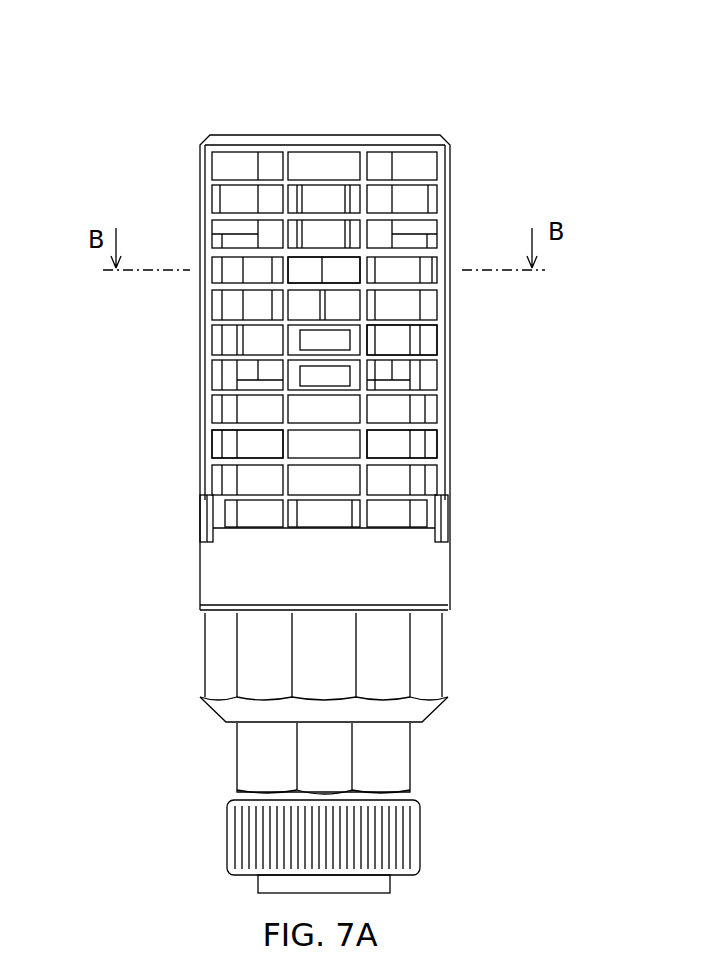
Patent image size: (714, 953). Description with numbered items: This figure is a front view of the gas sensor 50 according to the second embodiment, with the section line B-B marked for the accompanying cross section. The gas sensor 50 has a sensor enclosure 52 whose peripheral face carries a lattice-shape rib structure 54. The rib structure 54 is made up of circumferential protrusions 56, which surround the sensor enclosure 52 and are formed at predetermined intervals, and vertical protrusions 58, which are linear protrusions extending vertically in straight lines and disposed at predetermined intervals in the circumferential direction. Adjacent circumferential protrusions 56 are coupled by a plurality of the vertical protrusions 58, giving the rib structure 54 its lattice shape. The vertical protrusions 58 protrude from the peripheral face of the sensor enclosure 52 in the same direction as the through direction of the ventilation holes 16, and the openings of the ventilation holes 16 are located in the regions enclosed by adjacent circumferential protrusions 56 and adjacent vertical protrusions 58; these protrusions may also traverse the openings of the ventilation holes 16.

The gas sensor 50 is at (186, 94).
The ventilation holes 16 is at (320, 268).
The sensor enclosure 52 is at (450, 170).
The rib structure 54 is at (400, 350).
The circumferential protrusions 56 is at (262, 458).
The vertical protrusions 58 is at (372, 447).